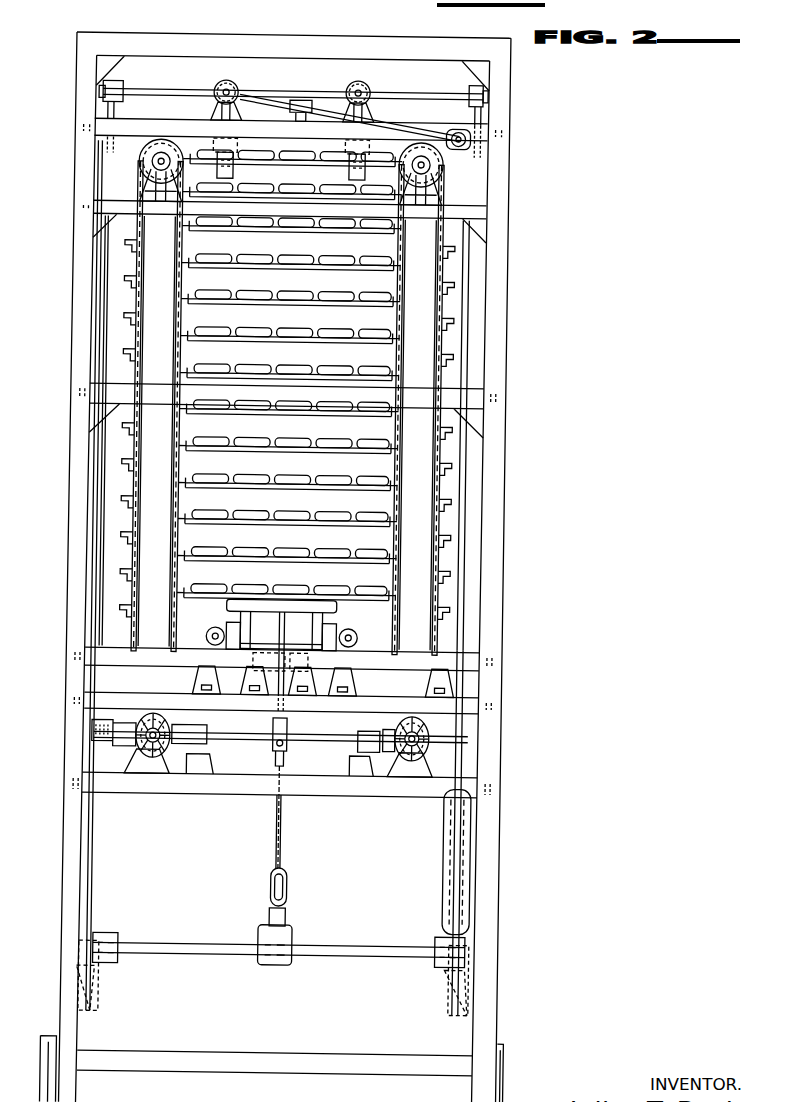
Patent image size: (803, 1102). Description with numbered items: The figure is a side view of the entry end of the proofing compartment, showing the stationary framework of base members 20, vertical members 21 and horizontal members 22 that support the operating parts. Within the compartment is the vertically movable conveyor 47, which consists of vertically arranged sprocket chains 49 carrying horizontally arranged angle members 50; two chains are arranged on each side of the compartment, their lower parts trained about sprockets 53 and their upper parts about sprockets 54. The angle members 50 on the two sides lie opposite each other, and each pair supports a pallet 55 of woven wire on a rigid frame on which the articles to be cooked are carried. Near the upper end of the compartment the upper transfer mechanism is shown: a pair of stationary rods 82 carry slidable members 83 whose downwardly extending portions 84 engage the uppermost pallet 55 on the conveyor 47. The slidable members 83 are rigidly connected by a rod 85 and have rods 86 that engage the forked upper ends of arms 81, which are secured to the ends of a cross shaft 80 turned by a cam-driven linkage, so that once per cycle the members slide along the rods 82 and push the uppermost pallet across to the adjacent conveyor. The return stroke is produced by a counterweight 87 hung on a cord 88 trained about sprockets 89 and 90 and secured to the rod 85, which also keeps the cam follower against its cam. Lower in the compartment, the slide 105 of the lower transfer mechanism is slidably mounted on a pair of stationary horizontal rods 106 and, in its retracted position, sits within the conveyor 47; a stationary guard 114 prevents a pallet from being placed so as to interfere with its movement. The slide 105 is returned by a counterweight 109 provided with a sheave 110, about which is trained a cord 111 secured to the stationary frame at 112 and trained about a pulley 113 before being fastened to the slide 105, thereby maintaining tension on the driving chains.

The base members 20 is at (45, 1048).
The vertical members 21 is at (494, 762).
The horizontal members 22 is at (371, 42).
The conveyor 47 is at (136, 484).
The sprocket chains 49 is at (133, 532).
The angle members 50 is at (123, 606).
The sprockets 53 is at (150, 712).
The sprockets 54 is at (164, 136).
The pallet 55 is at (272, 168).
The cross shaft 80 is at (170, 940).
The arms 81 is at (96, 868).
The stationary rods 82 is at (237, 86).
The slidable members 83 is at (218, 84).
The downwardly extending portions 84 is at (234, 178).
The rod 85 is at (277, 92).
The rods 86 is at (134, 90).
The counterweight 87 is at (440, 843).
The cord 88 is at (468, 336).
The sprocket 89 is at (488, 155).
The sprocket 90 is at (290, 108).
The slide 105 is at (255, 652).
The stationary horizontal rods 106 is at (214, 630).
The counterweight 109 is at (292, 936).
The sheave 110 is at (290, 888).
The cord 111 is at (283, 842).
The frame attachment point 112 is at (288, 748).
The pulley 113 is at (275, 688).
The stationary guard 114 is at (283, 600).